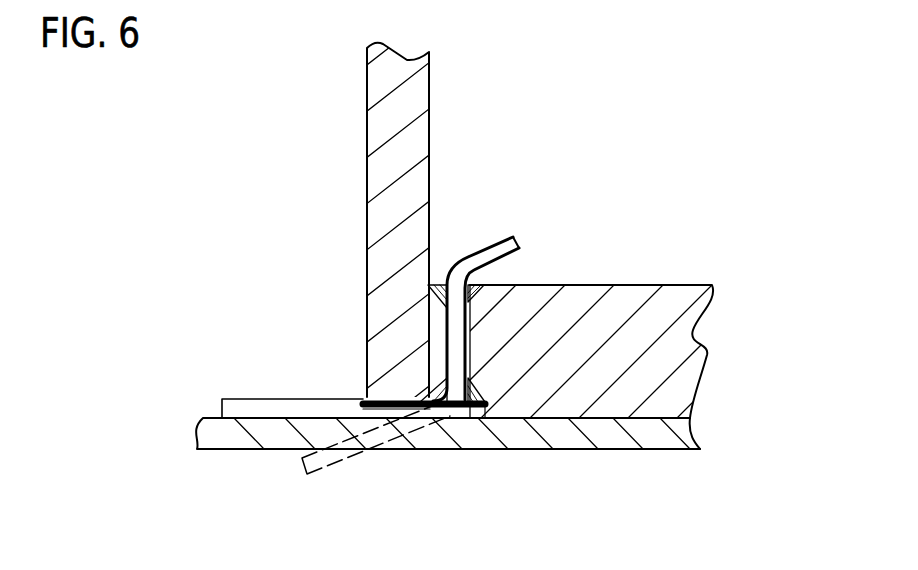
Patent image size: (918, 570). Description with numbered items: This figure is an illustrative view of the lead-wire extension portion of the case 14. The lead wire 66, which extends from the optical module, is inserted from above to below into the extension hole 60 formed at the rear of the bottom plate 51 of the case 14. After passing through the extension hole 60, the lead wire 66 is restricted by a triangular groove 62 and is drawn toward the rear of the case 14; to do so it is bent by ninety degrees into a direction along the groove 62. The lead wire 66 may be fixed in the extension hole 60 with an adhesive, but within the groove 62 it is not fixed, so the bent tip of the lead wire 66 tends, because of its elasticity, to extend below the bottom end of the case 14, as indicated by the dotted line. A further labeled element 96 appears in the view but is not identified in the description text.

The case 14 is at (360, 186).
The bottom plate 51 is at (605, 303).
The extension hole 60 is at (441, 277).
The lead wire 66 is at (483, 262).
The triangular groove 62 is at (466, 418).
The base plate 96 is at (260, 438).